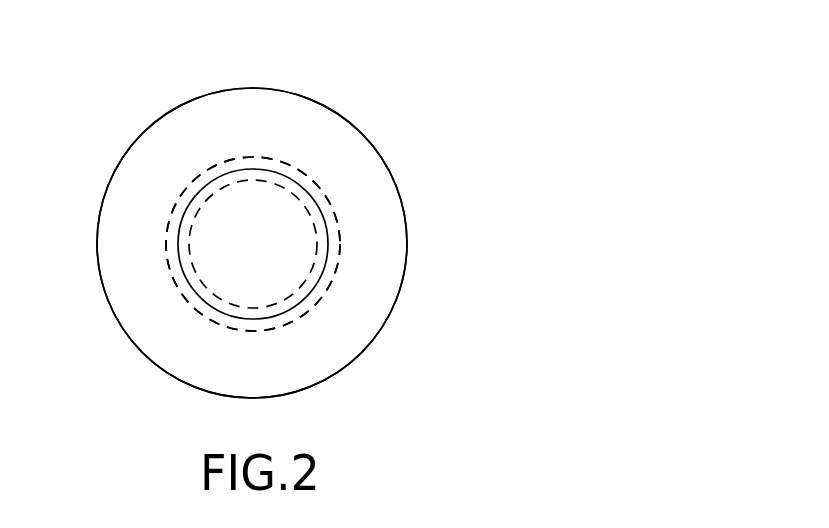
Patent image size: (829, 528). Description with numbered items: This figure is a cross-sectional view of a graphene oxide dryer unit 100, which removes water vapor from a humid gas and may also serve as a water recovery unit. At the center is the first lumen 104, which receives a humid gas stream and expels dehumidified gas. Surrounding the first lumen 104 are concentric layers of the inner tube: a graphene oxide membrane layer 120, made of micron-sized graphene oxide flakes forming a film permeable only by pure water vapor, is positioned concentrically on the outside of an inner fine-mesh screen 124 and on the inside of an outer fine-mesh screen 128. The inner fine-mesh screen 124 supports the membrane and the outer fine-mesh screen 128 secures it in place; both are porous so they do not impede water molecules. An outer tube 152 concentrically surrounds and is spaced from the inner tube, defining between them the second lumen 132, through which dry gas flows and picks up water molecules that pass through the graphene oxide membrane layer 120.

The graphene oxide dryer unit 100 is at (383, 76).
The first lumen 104 is at (265, 254).
The graphene oxide membrane layer 120 is at (170, 222).
The inner fine-mesh screen 124 is at (323, 210).
The outer fine-mesh screen 128 is at (333, 265).
The second lumen 132 is at (266, 370).
The outer tube 152 is at (327, 378).